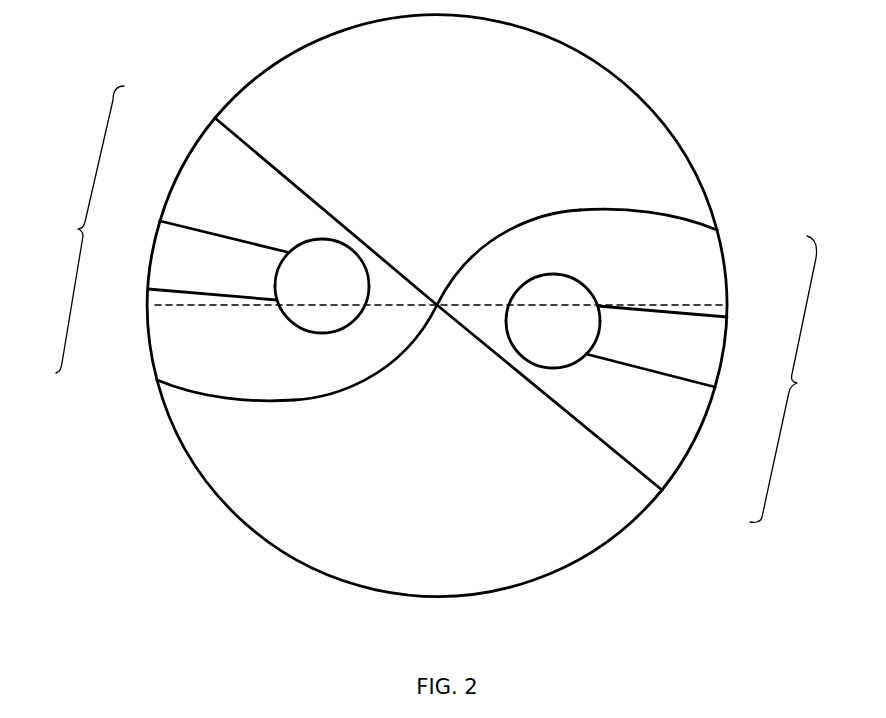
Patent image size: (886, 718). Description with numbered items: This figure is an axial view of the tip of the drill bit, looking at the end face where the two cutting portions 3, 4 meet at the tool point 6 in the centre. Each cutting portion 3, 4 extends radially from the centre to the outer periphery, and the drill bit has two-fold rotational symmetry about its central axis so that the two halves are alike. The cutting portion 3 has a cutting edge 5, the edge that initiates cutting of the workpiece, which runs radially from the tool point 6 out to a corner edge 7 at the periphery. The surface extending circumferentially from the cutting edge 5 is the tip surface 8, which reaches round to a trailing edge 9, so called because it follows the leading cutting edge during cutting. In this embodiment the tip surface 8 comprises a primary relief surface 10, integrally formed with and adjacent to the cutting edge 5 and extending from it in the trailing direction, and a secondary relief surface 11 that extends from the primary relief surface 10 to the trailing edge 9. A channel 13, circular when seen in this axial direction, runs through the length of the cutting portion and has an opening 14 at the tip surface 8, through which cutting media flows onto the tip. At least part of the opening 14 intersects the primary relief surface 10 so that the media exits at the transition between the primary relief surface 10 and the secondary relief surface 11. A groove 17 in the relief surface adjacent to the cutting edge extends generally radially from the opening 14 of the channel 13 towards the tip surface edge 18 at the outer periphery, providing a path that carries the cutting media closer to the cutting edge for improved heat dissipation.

The cutting portion 3 is at (208, 130).
The cutting portion 4 is at (663, 462).
The cutting edge 5 is at (270, 155).
The tool point 6 is at (440, 308).
The corner edge 7 is at (216, 142).
The tip surface 8 is at (78, 228).
The trailing edge 9 is at (227, 398).
The primary relief surface 10 is at (598, 425).
The secondary relief surface 11 is at (192, 372).
The channel 13 is at (327, 238).
The opening 14 is at (347, 268).
The groove 17 is at (166, 276).
The tip surface edge 18 is at (188, 160).